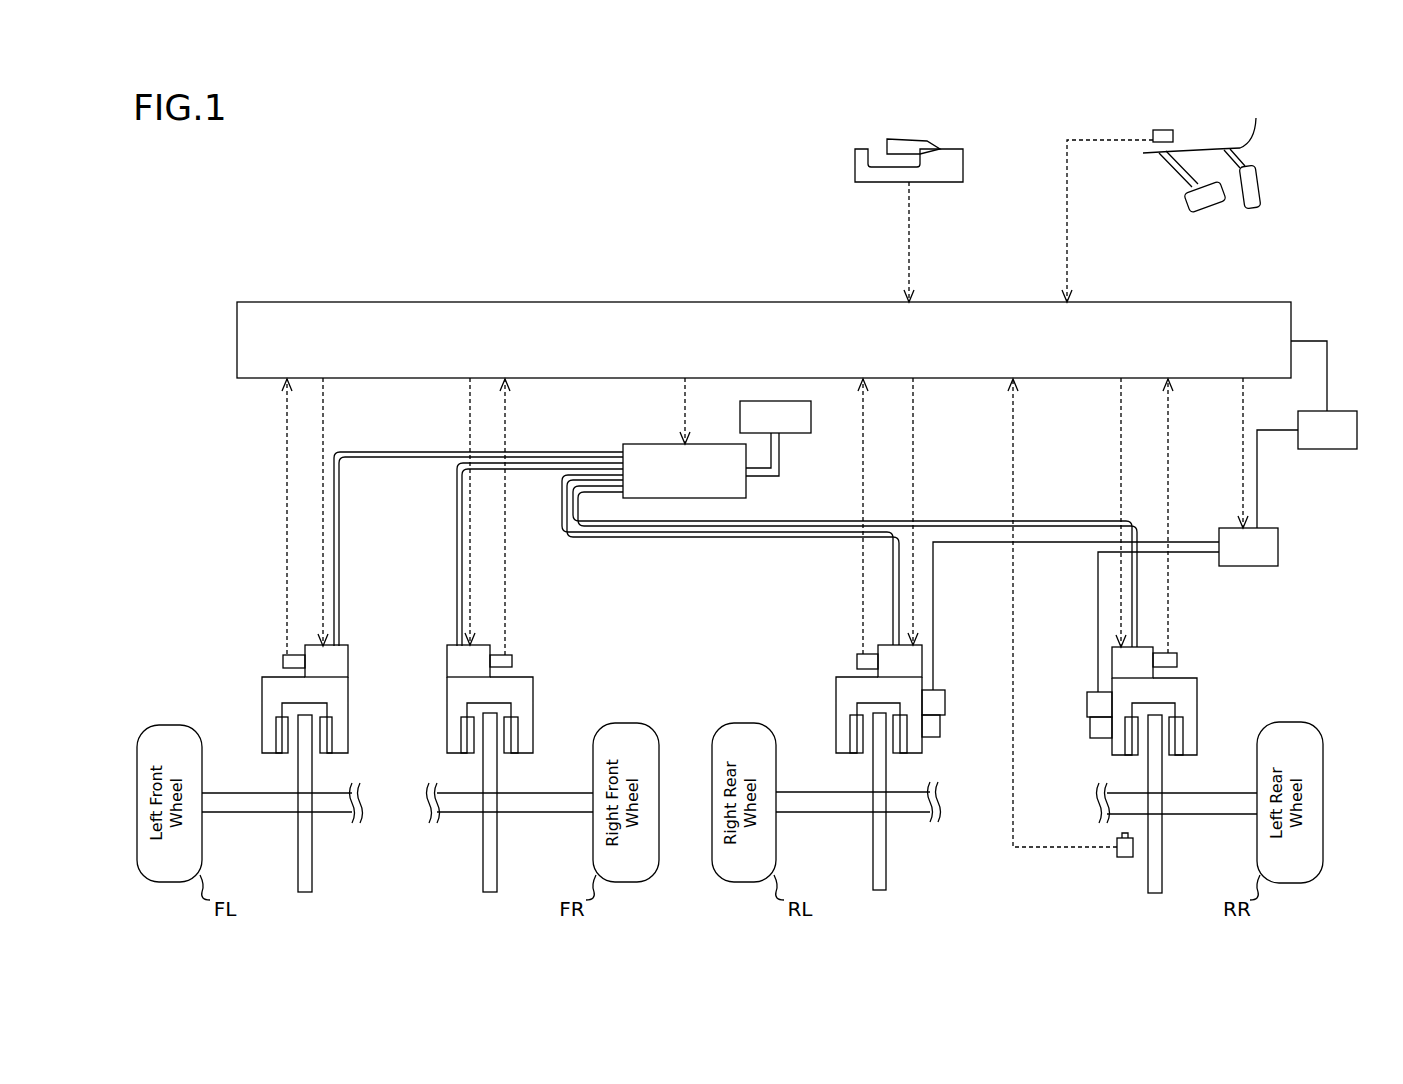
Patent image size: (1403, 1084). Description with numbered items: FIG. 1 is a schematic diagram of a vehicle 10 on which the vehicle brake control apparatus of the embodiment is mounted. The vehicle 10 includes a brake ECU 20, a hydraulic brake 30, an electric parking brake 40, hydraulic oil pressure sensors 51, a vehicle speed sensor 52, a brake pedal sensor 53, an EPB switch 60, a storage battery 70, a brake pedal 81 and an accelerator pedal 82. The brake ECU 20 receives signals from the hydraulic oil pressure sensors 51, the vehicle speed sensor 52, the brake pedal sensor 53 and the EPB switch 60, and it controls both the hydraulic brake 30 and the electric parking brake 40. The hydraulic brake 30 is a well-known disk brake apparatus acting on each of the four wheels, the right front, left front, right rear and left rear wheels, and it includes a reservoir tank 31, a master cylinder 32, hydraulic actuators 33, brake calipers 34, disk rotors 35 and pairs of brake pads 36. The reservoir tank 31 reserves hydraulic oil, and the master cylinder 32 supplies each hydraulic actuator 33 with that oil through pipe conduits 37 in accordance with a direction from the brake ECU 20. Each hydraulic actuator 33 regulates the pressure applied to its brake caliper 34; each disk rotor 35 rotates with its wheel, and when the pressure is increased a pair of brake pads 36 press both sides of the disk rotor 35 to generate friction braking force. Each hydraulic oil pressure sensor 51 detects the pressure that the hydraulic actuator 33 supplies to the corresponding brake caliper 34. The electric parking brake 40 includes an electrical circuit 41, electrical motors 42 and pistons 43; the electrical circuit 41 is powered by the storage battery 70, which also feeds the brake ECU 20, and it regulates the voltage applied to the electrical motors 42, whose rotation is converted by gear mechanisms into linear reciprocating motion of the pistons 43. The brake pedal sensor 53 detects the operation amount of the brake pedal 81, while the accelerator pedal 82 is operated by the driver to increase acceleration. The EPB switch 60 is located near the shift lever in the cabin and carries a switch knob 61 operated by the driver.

The vehicle 10 is at (228, 210).
The brake ECU 20 is at (338, 302).
The hydraulic brake 30 is at (198, 461).
The reservoir tank 31 is at (800, 434).
The master cylinder 32 is at (746, 485).
The hydraulic actuator 33 is at (348, 664).
The brake caliper 34 is at (262, 715).
The disk rotor 35 is at (298, 838).
The brake pads 36 is at (284, 753).
The pipe conduit 37 is at (340, 515).
The electric parking brake 40 is at (1297, 526).
The electrical circuit 41 is at (1258, 566).
The electrical motor 42 is at (945, 700).
The piston 43 is at (940, 727).
The hydraulic oil pressure sensor 51 is at (283, 662).
The vehicle speed sensor 52 is at (1125, 857).
The brake pedal sensor 53 is at (1163, 130).
The EPB switch 60 is at (963, 164).
The switch knob 61 is at (897, 139).
The storage battery 70 is at (1340, 410).
The brake pedal 81 is at (1205, 212).
The accelerator pedal 82 is at (1249, 209).